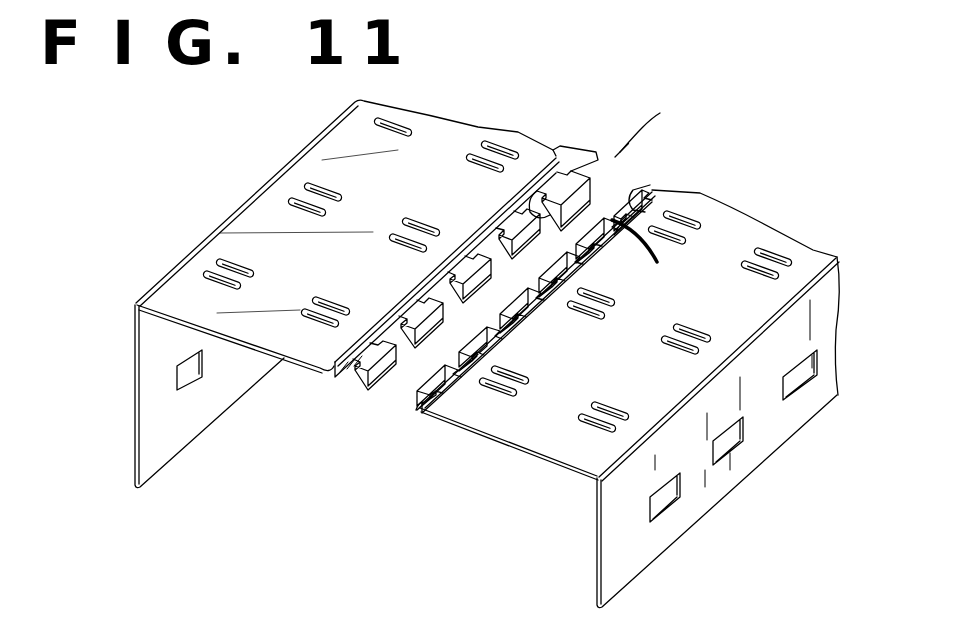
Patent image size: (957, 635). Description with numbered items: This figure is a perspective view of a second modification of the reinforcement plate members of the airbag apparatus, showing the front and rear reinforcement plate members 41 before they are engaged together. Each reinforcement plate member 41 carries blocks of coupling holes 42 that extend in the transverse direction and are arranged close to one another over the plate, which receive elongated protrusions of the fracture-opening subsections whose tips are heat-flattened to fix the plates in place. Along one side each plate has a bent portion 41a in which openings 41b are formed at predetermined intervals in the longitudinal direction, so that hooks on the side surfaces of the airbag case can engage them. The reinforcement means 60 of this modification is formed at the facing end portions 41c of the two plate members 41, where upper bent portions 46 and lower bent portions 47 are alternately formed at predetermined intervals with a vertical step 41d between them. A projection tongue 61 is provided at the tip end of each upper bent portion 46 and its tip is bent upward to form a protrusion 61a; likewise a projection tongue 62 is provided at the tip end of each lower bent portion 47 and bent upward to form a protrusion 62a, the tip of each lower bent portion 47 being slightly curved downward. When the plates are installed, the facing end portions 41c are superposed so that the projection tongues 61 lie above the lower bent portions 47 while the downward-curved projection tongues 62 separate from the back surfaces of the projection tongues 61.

The reinforcement plate member 41 is at (321, 173).
The bent portion 41a is at (165, 450).
The opening 41b is at (187, 382).
The facing end portion 41c is at (360, 377).
The vertical step 41d is at (366, 330).
The coupling hole 42 is at (221, 264).
The upper bent portion 46 is at (477, 250).
The lower bent portion 47 is at (441, 278).
The reinforcement means 60 is at (658, 119).
The projection tongue 61 is at (610, 232).
The protrusion 61a is at (497, 225).
The projection tongue 62 is at (642, 208).
The protrusion 62a is at (540, 207).